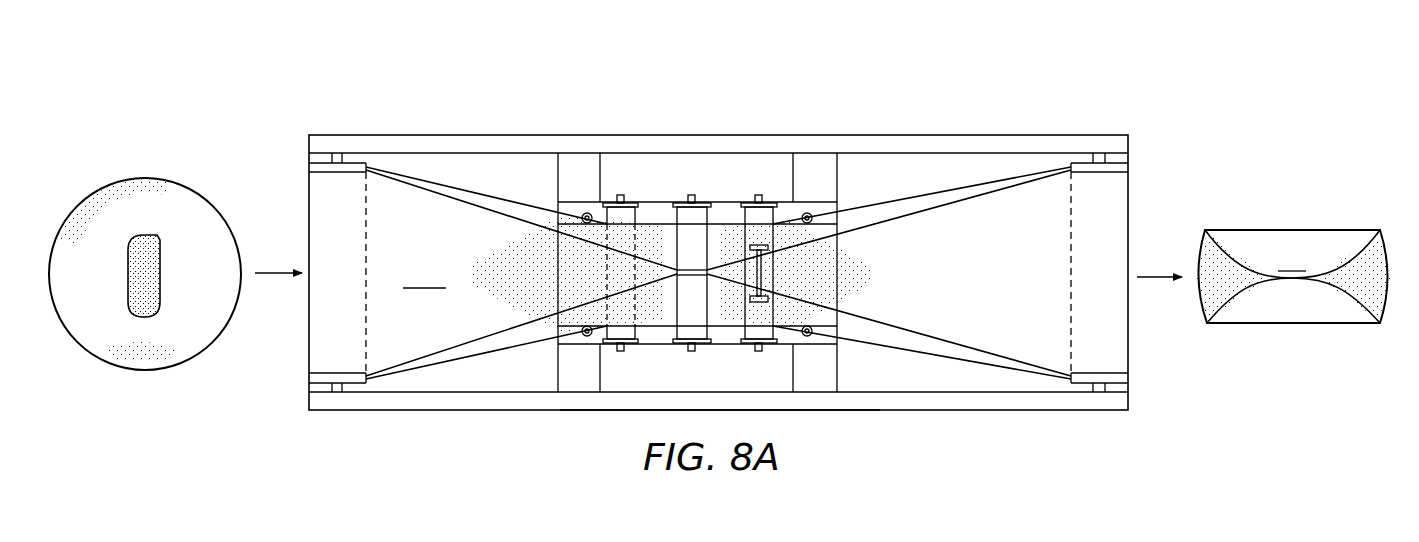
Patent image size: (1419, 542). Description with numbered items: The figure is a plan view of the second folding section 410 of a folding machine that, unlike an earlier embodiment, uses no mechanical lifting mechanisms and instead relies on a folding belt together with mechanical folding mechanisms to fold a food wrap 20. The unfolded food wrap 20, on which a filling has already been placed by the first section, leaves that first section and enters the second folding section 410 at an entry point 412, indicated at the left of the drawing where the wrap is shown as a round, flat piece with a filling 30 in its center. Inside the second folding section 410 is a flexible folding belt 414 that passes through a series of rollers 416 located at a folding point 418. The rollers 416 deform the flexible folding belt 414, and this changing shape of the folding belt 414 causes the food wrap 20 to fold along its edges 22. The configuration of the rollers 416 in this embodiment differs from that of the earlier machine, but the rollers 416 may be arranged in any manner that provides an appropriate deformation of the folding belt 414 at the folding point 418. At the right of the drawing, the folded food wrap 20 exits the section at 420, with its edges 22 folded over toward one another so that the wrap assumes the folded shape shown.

The food wrap 20 is at (198, 190).
The edges 22 is at (1283, 229).
The slot / opening 30 is at (160, 286).
The second folding section 410 is at (640, 92).
The entry point 412 is at (225, 397).
The flexible folding belt 414 is at (882, 215).
The rollers 416 is at (637, 209).
The folding point 418 is at (595, 420).
The output workpiece direction 420 is at (1160, 356).